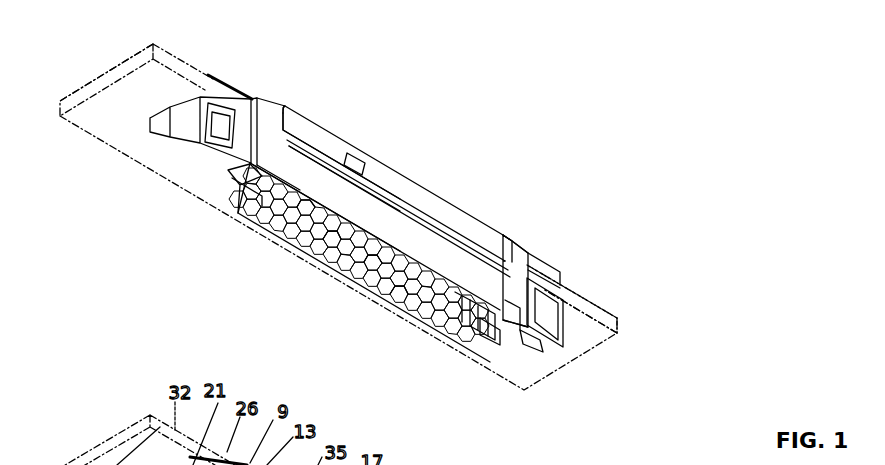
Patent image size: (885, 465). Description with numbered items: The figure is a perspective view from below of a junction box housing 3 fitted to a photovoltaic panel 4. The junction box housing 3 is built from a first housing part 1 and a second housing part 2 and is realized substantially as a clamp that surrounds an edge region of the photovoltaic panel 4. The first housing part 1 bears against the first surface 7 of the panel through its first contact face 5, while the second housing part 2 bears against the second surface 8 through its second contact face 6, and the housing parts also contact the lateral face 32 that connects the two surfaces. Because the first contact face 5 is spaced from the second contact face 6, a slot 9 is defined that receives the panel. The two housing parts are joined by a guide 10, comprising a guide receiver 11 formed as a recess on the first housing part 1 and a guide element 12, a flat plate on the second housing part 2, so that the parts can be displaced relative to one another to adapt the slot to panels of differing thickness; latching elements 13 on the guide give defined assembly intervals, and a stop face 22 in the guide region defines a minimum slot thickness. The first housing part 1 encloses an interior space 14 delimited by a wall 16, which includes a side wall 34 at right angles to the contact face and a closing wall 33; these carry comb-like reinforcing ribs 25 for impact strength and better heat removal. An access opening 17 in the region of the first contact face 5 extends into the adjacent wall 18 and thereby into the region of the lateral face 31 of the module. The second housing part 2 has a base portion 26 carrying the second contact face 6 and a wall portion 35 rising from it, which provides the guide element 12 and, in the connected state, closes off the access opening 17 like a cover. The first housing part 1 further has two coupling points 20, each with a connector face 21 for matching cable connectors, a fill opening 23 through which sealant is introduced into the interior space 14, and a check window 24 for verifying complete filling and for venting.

The first housing part 1 is at (513, 320).
The second housing part 2 is at (503, 237).
The junction box housing 3 is at (393, 220).
The photovoltaic panel 4 is at (617, 318).
The first contact face 5 is at (562, 308).
The second contact face 6 is at (555, 271).
The first surface 7 is at (597, 333).
The second surface 8 is at (593, 299).
The slot 9 is at (252, 105).
The guide 10 is at (250, 192).
The guide receiver 11 is at (472, 305).
The guide element 12 is at (510, 243).
The latching elements 13 is at (523, 249).
The interior space 14 is at (333, 253).
The wall 16 is at (400, 303).
The access opening 17 is at (327, 160).
The wall 18 is at (293, 160).
The coupling points 20 is at (503, 335).
The connector face 21 is at (540, 347).
The stop face 22 is at (458, 246).
The fill opening 23 is at (247, 188).
The check window 24 is at (500, 320).
The reinforcing ribs 25 is at (369, 265).
The base portion 26 is at (222, 84).
The lateral face 31 is at (167, 60).
The lateral face 32 is at (178, 70).
The closing wall 33 is at (307, 227).
The side wall 34 is at (360, 203).
The wall portion 35 is at (307, 137).